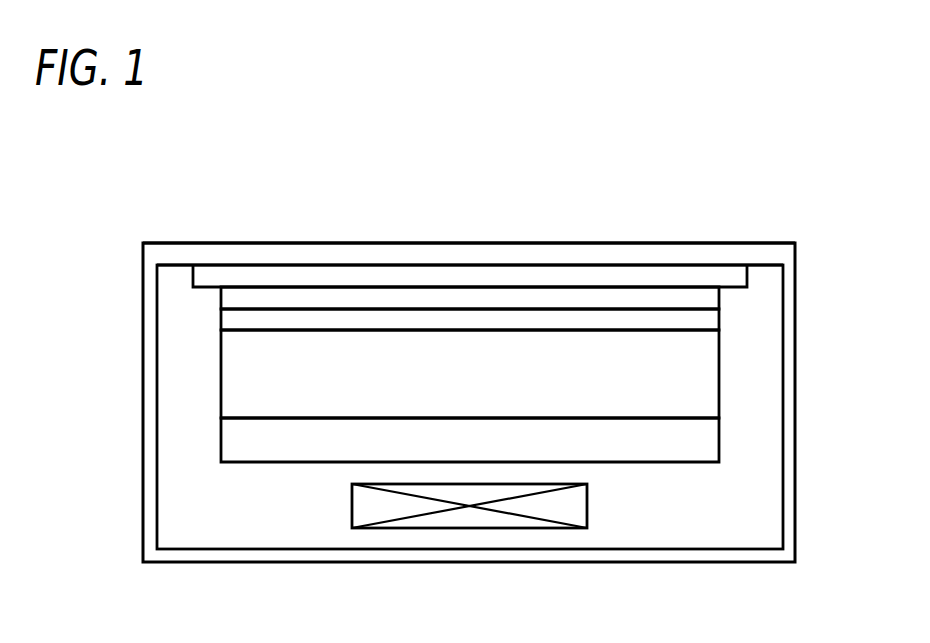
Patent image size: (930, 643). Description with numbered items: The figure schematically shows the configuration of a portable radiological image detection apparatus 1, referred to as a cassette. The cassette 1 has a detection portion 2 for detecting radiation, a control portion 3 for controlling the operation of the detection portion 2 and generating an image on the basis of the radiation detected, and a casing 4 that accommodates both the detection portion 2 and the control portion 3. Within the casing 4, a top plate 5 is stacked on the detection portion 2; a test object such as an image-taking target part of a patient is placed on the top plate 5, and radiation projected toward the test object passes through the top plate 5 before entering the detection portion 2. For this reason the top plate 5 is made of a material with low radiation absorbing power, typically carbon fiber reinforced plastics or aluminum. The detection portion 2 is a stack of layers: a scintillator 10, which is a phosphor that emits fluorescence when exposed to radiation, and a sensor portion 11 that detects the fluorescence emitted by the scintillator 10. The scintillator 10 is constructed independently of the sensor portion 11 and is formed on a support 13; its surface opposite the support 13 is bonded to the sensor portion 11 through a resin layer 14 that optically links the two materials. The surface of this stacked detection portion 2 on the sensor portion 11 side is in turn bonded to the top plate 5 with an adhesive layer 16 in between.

The radiological image detection apparatus 1 is at (799, 179).
The detection portion 2 is at (87, 280).
The control portion 3 is at (472, 515).
The casing 4 is at (796, 387).
The top plate 5 is at (639, 255).
The scintillator 10 is at (228, 370).
The sensor portion 11 is at (228, 296).
The support 13 is at (228, 440).
The resin layer 14 is at (228, 322).
The adhesive layer 16 is at (735, 278).